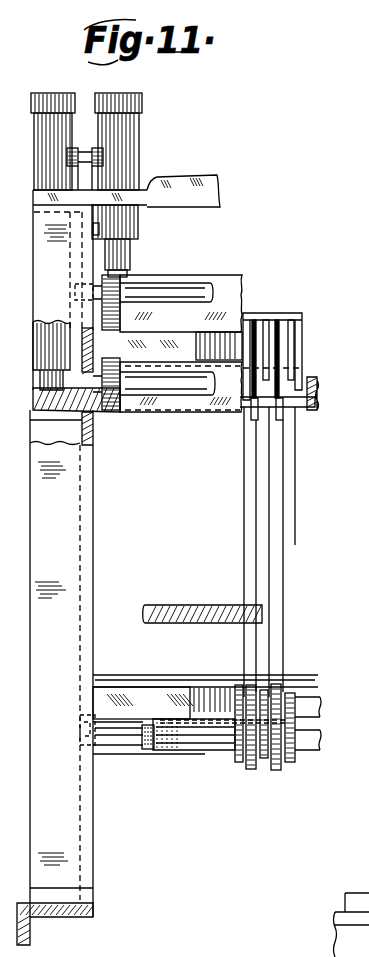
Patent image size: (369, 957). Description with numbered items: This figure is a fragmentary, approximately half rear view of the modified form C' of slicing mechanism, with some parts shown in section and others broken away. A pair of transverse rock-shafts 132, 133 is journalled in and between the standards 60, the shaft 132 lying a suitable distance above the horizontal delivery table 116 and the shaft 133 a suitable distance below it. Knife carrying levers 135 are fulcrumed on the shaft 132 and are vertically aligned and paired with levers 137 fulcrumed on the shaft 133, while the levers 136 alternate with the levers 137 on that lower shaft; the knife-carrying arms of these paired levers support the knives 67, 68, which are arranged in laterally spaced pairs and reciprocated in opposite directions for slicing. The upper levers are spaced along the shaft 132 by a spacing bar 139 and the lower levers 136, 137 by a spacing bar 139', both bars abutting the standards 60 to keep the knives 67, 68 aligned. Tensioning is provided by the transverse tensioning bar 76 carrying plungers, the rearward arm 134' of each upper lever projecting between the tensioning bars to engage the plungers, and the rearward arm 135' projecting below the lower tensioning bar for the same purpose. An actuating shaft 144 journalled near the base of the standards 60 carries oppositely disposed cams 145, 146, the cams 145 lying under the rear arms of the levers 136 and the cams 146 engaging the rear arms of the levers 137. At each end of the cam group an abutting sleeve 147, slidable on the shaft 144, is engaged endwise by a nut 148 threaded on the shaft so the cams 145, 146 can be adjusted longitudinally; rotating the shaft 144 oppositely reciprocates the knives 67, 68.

The modified form of slicing mechanism C' is at (167, 185).
The standards 60 is at (81, 838).
The tensioning bar 76 is at (161, 369).
The spacing bar 139 is at (279, 342).
The rearward arm 134' is at (309, 347).
The knife carrying lever 135 is at (300, 359).
The transverse rock-shaft 132 is at (313, 418).
The rearward arm 135' is at (240, 426).
The knives 67 is at (294, 543).
The knives 68 is at (280, 568).
The delivery table 116 is at (188, 604).
The transverse rock-shaft 133 is at (162, 677).
The spacing bar 139' is at (161, 682).
The lever 136 is at (236, 701).
The cam 145 is at (264, 770).
The lever 137 is at (278, 691).
The cam 146 is at (280, 767).
The actuating shaft 144 is at (126, 748).
The nut 148 is at (156, 754).
The abutting sleeve 147 is at (220, 758).